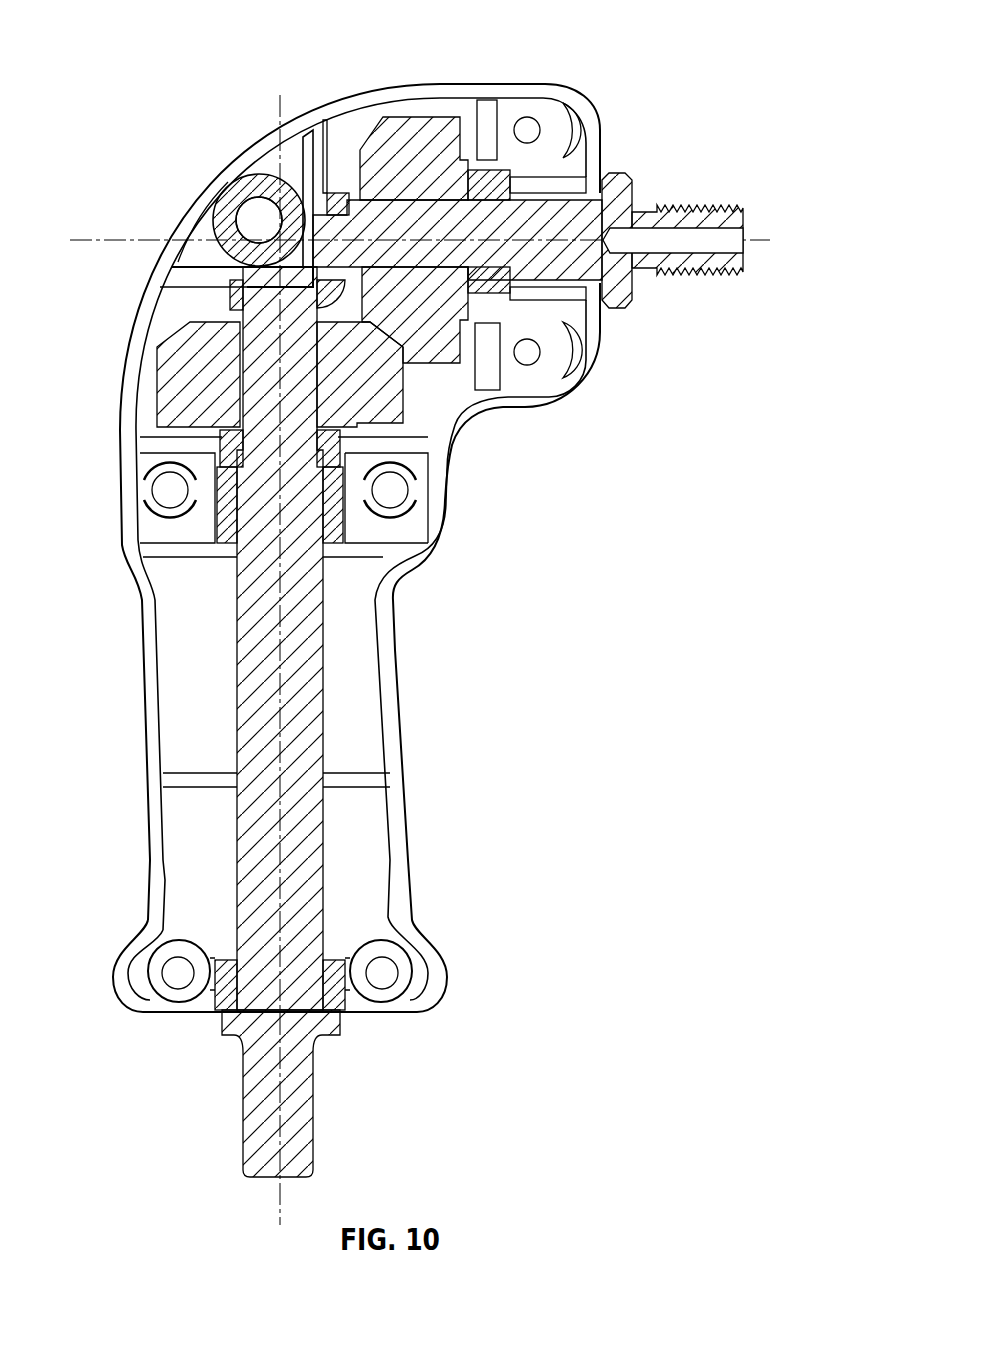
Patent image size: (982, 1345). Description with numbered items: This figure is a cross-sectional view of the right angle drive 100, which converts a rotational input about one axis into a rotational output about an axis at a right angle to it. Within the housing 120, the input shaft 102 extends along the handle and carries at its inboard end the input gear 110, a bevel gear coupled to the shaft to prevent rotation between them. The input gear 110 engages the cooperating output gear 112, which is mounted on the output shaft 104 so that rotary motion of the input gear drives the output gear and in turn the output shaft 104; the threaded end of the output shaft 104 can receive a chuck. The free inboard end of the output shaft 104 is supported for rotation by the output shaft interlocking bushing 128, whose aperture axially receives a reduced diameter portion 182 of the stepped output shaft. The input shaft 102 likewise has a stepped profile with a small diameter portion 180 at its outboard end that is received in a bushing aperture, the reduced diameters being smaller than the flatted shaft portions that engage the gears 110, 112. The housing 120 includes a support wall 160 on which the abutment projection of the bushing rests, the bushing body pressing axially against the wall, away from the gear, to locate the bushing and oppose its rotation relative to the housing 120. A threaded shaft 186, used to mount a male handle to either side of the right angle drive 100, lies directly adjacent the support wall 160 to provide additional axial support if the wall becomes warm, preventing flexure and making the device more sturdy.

The right angle drive 100 is at (692, 58).
The input shaft 102 is at (250, 622).
The output shaft 104 is at (622, 192).
The input gear 110 is at (167, 377).
The output gear 112 is at (418, 130).
The housing 120 is at (157, 822).
The output shaft interlocking bushing 128 is at (290, 147).
The support wall 160 is at (193, 277).
The small diameter portion 180 is at (313, 233).
The reduced diameter portion 182 is at (273, 277).
The threaded shaft 186 is at (230, 187).